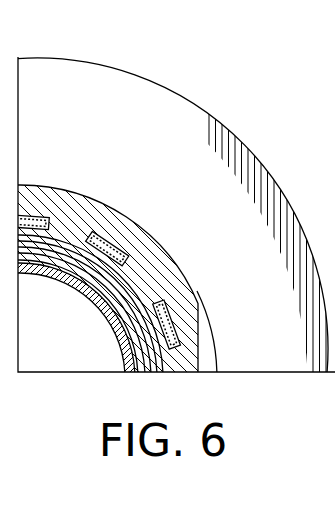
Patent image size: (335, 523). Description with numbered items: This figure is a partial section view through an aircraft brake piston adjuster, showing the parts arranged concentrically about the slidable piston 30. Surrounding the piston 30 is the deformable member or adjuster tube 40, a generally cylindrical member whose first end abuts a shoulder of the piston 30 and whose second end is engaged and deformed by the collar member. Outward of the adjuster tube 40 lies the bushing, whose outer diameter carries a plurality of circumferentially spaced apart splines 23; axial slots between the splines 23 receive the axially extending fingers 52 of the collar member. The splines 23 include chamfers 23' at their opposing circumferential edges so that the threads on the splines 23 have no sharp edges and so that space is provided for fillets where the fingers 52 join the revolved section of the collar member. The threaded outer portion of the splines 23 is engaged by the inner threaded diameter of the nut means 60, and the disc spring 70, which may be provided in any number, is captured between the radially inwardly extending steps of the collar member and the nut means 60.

The disc spring 70 is at (194, 101).
The nut means 60 is at (172, 283).
The fingers 52 is at (113, 228).
The splines 23 is at (90, 303).
The chamfers 23' is at (91, 309).
The adjuster tube 40 is at (112, 288).
The piston 30 is at (120, 354).